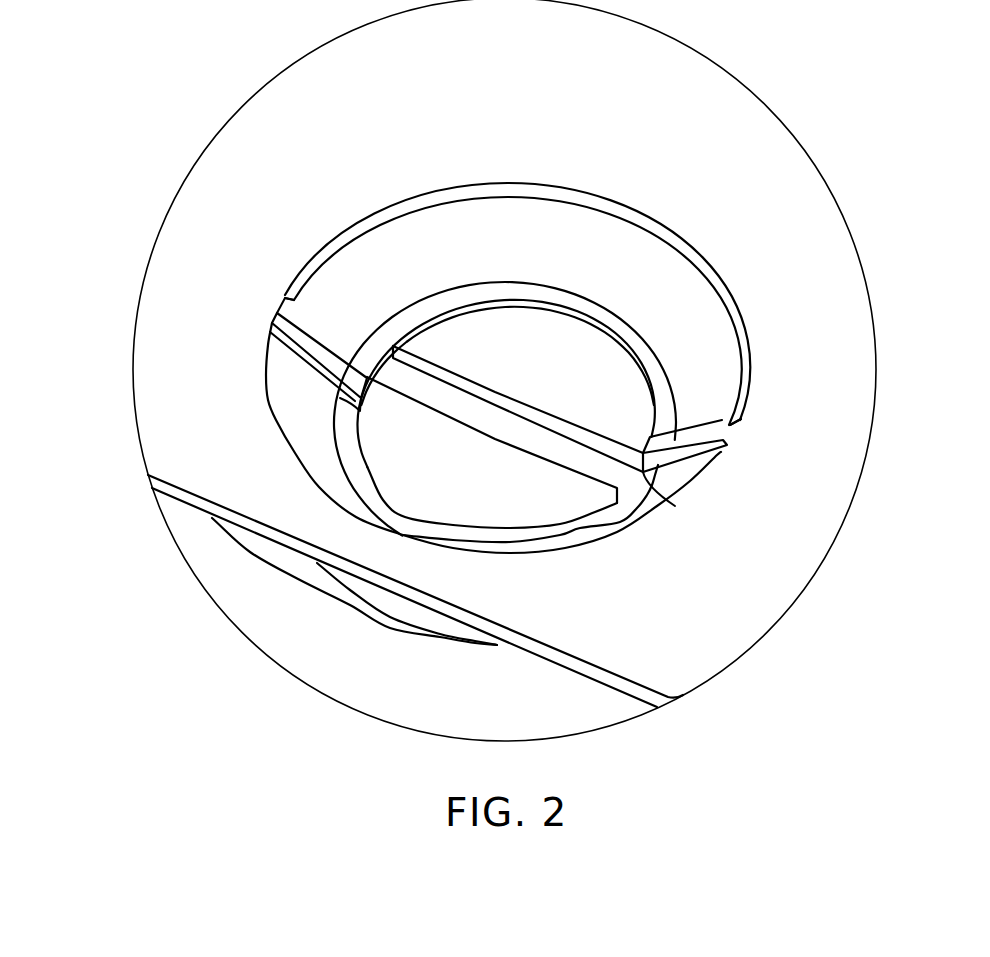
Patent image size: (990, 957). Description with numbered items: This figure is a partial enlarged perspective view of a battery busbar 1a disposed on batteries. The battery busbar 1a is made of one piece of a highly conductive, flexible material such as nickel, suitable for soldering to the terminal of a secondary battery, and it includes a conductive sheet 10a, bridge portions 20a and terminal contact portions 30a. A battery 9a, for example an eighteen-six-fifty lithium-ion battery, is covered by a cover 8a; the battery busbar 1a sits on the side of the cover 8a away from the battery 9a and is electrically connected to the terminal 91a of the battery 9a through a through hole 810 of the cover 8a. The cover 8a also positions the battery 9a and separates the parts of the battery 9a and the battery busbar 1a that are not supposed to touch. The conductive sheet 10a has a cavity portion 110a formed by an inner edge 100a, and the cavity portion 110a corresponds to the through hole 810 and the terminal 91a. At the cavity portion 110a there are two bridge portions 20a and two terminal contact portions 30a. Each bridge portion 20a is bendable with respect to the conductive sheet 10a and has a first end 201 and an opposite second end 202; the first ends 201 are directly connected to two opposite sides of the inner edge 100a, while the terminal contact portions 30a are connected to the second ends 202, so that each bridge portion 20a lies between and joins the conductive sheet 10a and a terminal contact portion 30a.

The battery busbar 1a is at (893, 459).
The inner edge 100a is at (368, 223).
The cavity portion 110a is at (618, 265).
The battery 9a is at (641, 316).
The terminal 91a is at (657, 370).
The terminal contact portion 30a is at (440, 450).
The bridge portion 20a is at (281, 438).
The first end 201 is at (283, 304).
The second end 202 is at (355, 398).
The cover 8a is at (352, 665).
The through hole 810 is at (285, 579).
The conductive sheet 10a is at (577, 618).